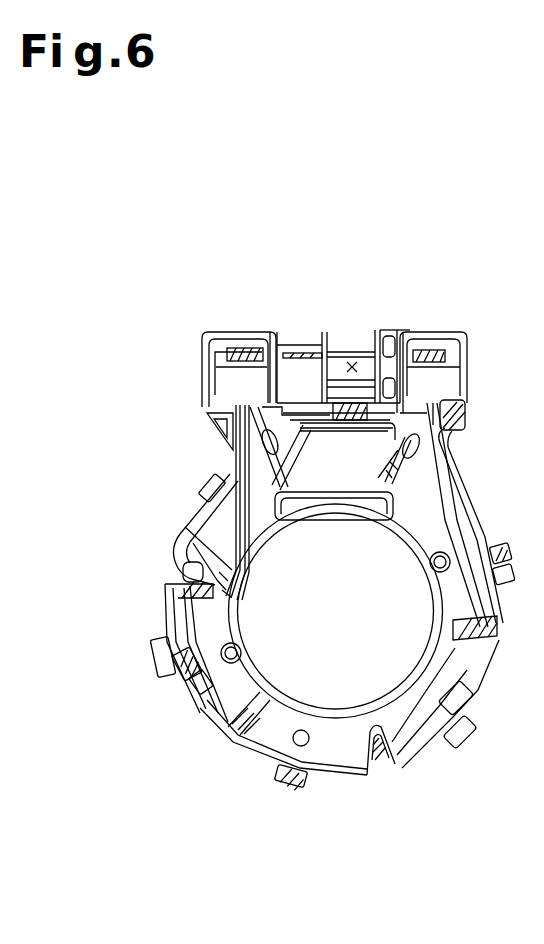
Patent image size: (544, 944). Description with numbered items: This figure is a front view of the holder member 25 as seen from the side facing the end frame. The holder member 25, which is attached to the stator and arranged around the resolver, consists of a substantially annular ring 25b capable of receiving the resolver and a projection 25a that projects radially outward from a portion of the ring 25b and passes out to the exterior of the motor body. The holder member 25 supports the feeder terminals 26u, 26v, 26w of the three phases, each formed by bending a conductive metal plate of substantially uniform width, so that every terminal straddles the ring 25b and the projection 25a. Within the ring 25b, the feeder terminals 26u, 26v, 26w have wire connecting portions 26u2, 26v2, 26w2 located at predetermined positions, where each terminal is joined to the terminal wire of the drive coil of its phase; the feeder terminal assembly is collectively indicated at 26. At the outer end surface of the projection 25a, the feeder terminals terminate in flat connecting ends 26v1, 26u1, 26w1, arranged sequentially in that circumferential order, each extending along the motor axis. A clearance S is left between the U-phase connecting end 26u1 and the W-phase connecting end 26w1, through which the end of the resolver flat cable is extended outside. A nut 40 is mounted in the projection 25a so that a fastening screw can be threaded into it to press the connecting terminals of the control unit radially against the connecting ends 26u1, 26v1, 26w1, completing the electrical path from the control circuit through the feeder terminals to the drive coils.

The nut 40 is at (213, 355).
The connecting end of V phase 26v1 is at (240, 330).
The connecting end of U phase 26u1 is at (298, 330).
The clearance S is at (352, 360).
The connecting end of W phase 26w1 is at (430, 330).
The projection 25a is at (468, 405).
The feeder terminal of U phase 26u is at (205, 411).
The wire connecting portion of U phase 26u2 is at (388, 477).
The ring 25b is at (418, 530).
The feeder terminal of W phase 26w is at (460, 490).
The holder member 25 is at (490, 528).
The bus bar unit 26 is at (497, 646).
The wire connecting portion of W phase 26w2 is at (378, 772).
The feeder terminal of V phase 26v is at (232, 521).
The wire connecting portion of V phase 26v2 is at (182, 570).